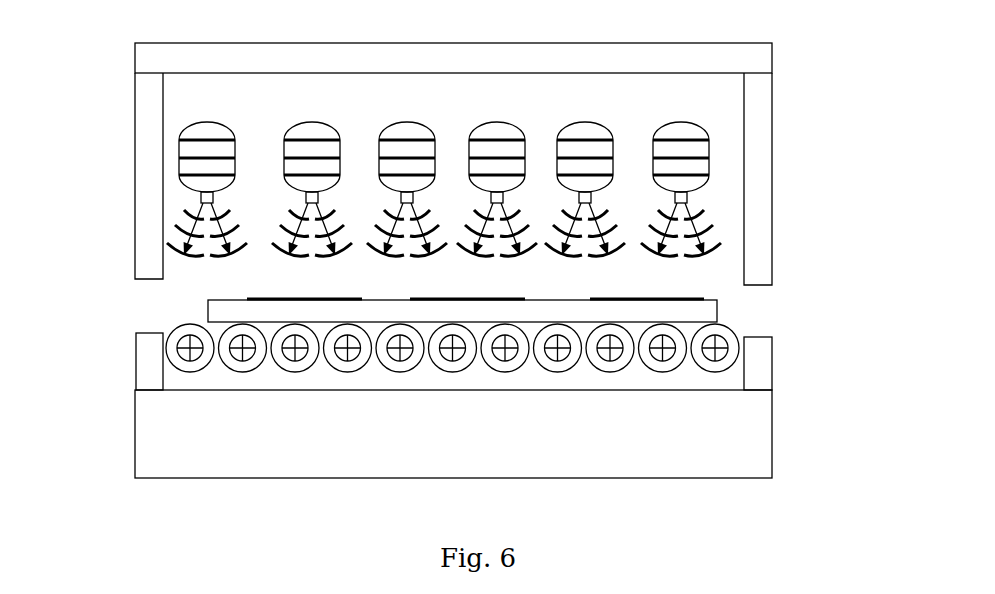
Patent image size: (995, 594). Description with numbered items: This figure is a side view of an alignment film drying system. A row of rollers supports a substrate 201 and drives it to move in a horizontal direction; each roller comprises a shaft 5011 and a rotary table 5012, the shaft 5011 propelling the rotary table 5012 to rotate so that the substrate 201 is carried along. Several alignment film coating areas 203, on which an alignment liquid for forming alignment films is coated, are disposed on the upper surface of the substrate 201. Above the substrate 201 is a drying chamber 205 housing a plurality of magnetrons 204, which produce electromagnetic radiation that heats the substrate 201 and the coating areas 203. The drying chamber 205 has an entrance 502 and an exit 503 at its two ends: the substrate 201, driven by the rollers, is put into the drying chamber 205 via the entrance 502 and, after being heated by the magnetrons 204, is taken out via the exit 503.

The substrate 201 is at (694, 315).
The alignment film coating areas 203 is at (660, 298).
The magnetrons 204 is at (715, 148).
The drying chamber 205 is at (756, 184).
The entrance 502 is at (760, 323).
The exit 503 is at (153, 315).
The shaft 5011 is at (723, 356).
The rotary table 5012 is at (717, 371).